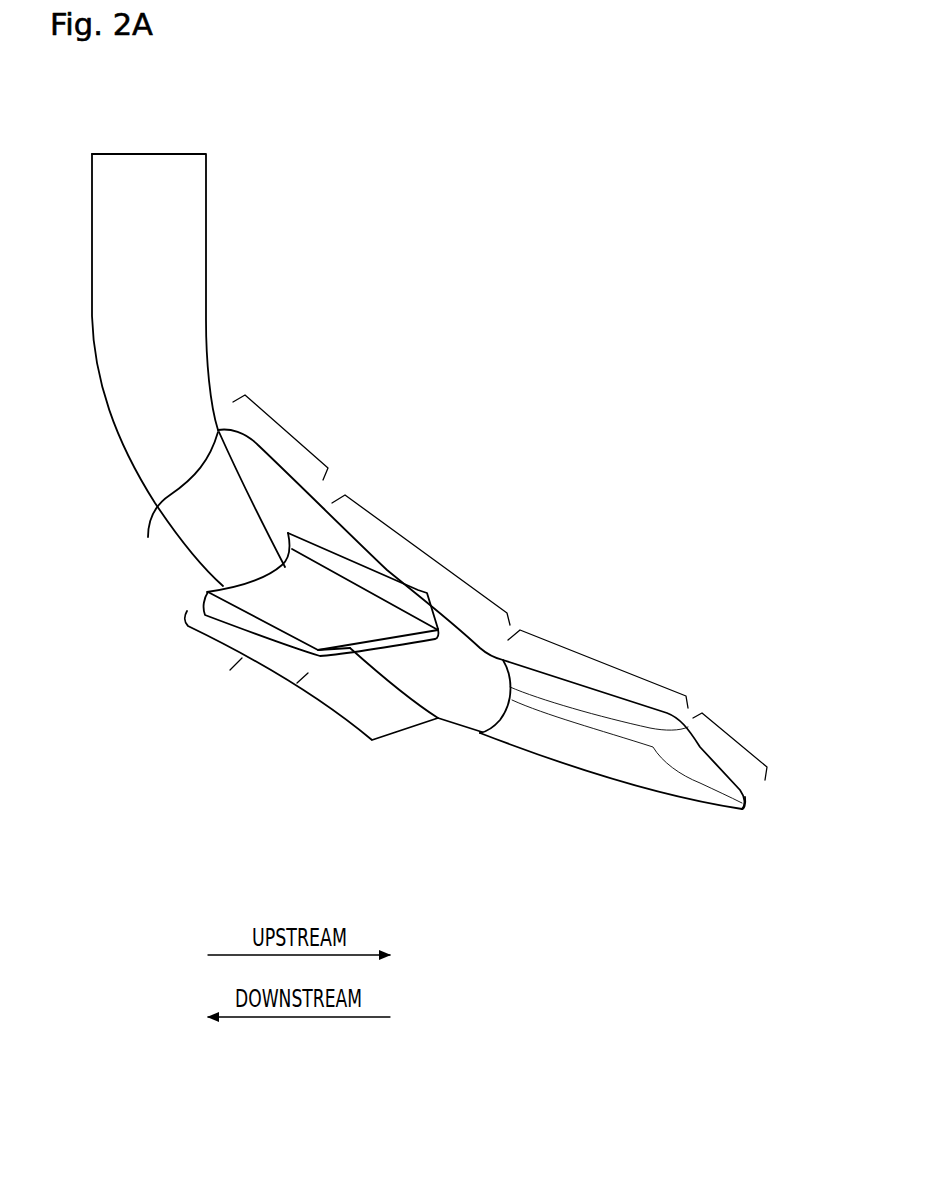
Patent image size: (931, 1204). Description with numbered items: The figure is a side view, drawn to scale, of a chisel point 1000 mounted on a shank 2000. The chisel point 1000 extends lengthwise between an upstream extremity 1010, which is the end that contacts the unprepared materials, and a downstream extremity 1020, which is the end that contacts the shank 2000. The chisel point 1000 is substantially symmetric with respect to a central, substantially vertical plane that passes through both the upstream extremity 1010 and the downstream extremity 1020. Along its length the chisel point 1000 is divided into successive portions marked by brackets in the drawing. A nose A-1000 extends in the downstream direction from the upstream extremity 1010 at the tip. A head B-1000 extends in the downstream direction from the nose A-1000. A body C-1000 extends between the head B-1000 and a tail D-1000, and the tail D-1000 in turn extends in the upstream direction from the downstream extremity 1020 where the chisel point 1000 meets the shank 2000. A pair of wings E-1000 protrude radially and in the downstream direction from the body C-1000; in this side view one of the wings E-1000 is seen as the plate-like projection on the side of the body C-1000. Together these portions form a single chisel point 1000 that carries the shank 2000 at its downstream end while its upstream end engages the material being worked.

The shank 2000 is at (227, 228).
The chisel point 1000 is at (522, 364).
The downstream extremity 1020 is at (167, 499).
The upstream extremity 1010 is at (741, 812).
The nose A-1000 is at (735, 740).
The head B-1000 is at (607, 664).
The body C-1000 is at (427, 551).
The tail D-1000 is at (290, 433).
The pair of wings E-1000 is at (321, 618).